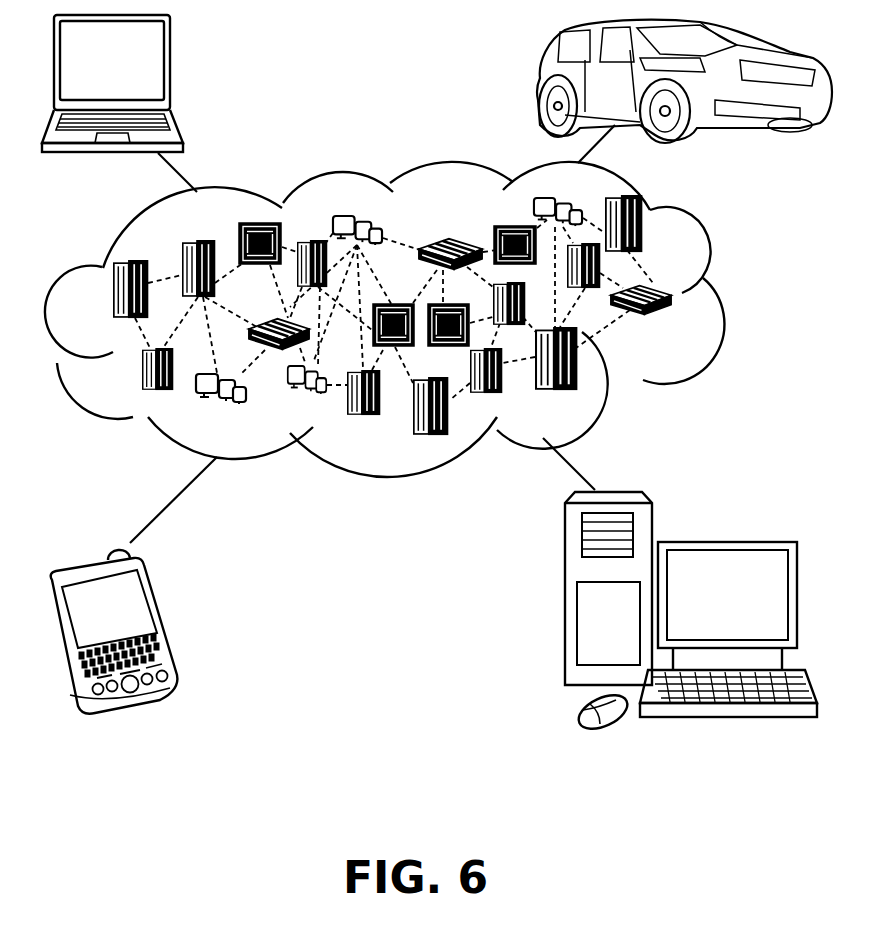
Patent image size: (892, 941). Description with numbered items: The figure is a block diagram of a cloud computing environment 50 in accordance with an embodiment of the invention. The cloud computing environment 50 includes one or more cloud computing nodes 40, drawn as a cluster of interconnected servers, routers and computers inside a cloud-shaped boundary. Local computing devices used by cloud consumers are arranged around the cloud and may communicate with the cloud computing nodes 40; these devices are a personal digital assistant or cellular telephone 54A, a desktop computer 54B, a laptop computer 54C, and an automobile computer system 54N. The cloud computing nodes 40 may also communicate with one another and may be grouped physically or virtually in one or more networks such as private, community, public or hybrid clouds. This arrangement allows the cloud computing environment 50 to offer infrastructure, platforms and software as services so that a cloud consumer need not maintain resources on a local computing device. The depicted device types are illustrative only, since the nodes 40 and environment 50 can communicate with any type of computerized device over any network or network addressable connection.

The cloud computing node 40 is at (677, 323).
The cloud computing environment 50 is at (408, 319).
The personal digital assistant or cellular telephone 54A is at (165, 617).
The desktop computer 54B is at (723, 540).
The laptop computer 54C is at (172, 68).
The automobile computer system 54N is at (540, 78).